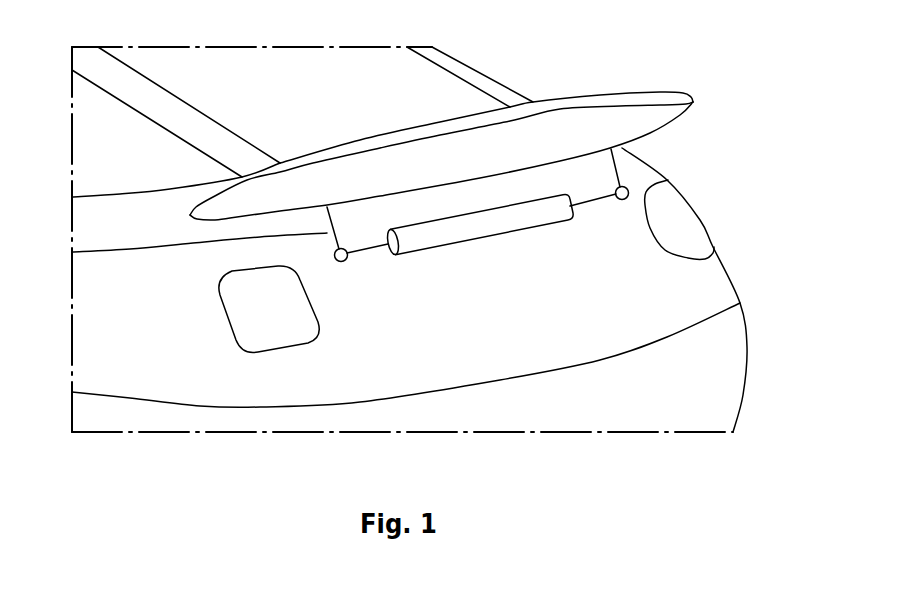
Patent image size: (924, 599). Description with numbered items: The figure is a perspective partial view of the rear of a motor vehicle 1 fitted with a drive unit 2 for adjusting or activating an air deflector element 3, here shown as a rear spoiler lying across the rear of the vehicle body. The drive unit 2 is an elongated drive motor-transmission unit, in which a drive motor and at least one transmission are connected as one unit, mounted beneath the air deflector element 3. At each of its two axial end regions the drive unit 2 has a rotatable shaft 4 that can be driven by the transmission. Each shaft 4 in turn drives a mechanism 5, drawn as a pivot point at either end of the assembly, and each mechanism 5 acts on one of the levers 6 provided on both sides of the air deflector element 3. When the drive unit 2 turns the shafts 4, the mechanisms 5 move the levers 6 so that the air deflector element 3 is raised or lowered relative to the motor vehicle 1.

The motor vehicle 1 is at (357, 84).
The drive unit 2 is at (492, 220).
The air deflector element 3 is at (592, 124).
The rotatable shaft 4 is at (370, 250).
The mechanism 5 is at (340, 262).
The levers 6 is at (72, 252).